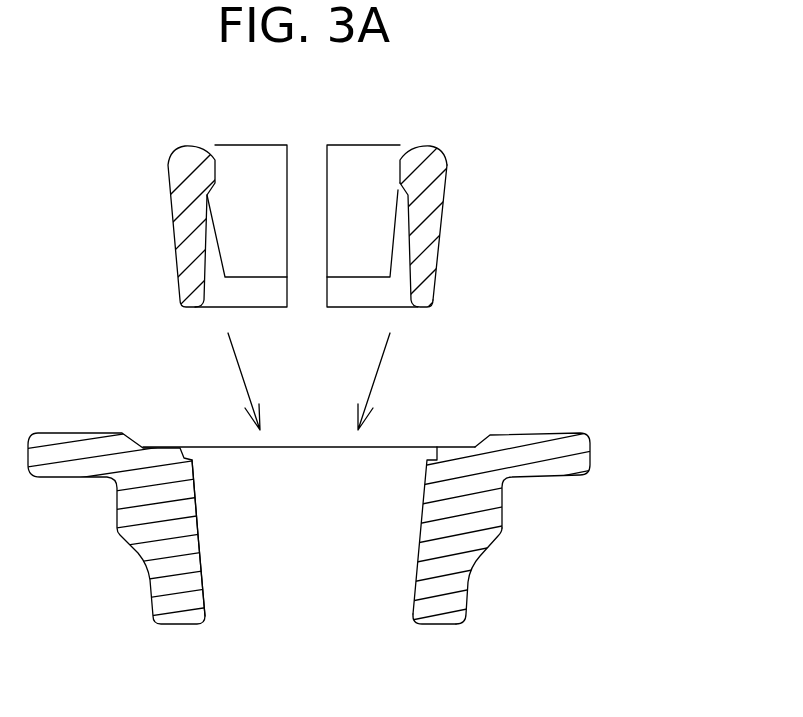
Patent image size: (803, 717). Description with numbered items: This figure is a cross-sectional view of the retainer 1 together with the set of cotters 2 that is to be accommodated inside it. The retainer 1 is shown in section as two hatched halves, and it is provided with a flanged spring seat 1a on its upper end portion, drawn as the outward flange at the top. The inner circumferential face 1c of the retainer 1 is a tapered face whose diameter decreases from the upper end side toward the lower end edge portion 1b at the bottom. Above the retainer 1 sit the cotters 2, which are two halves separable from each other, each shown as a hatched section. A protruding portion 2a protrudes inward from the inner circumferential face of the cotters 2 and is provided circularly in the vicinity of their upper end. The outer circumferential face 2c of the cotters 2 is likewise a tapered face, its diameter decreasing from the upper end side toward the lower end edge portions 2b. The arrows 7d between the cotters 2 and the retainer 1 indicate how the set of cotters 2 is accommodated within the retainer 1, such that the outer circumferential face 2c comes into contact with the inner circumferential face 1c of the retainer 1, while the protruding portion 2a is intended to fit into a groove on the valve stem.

The retainer 1 is at (339, 543).
The flanged spring seat 1a is at (590, 462).
The lower end edge portion 1b is at (442, 627).
The inner circumferential face 1c is at (198, 535).
The cotters 2 is at (427, 219).
The protruding portion 2a is at (402, 160).
The lower end edge portions 2b is at (405, 308).
The outer circumferential face 2c is at (446, 198).
The arrows 7d is at (238, 367).